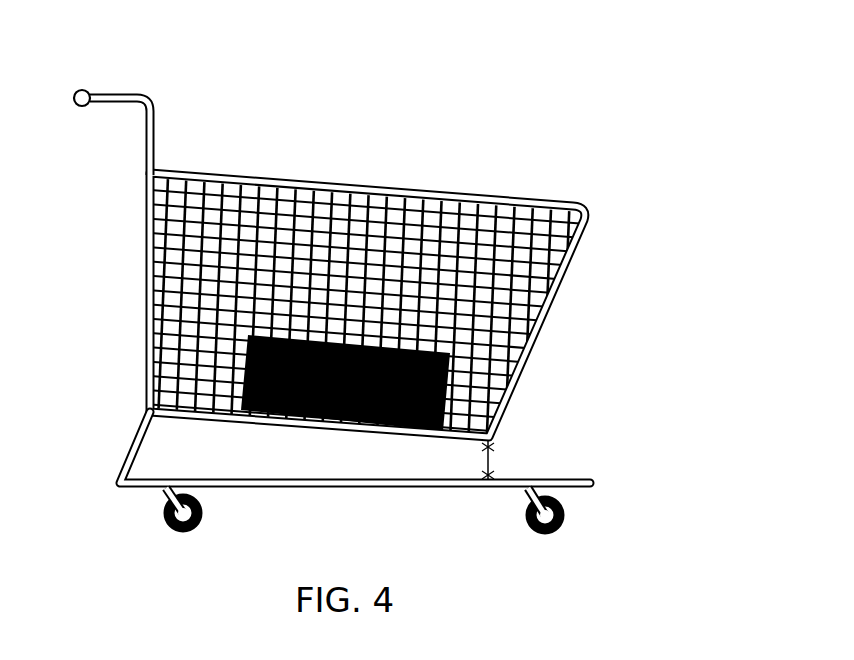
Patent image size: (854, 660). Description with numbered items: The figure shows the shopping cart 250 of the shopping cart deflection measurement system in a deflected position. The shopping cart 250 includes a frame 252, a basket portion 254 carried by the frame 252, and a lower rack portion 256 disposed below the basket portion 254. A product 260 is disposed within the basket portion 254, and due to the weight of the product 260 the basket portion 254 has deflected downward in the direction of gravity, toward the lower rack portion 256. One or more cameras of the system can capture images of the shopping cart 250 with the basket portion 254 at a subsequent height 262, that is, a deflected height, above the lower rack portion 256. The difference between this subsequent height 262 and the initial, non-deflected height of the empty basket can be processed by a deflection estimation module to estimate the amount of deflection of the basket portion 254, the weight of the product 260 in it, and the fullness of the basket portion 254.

The shopping cart 250 is at (417, 80).
The frame 252 is at (160, 125).
The basket portion 254 is at (414, 302).
The lower rack portion 256 is at (596, 483).
The product 260 is at (534, 347).
The subsequent height 262 is at (492, 458).